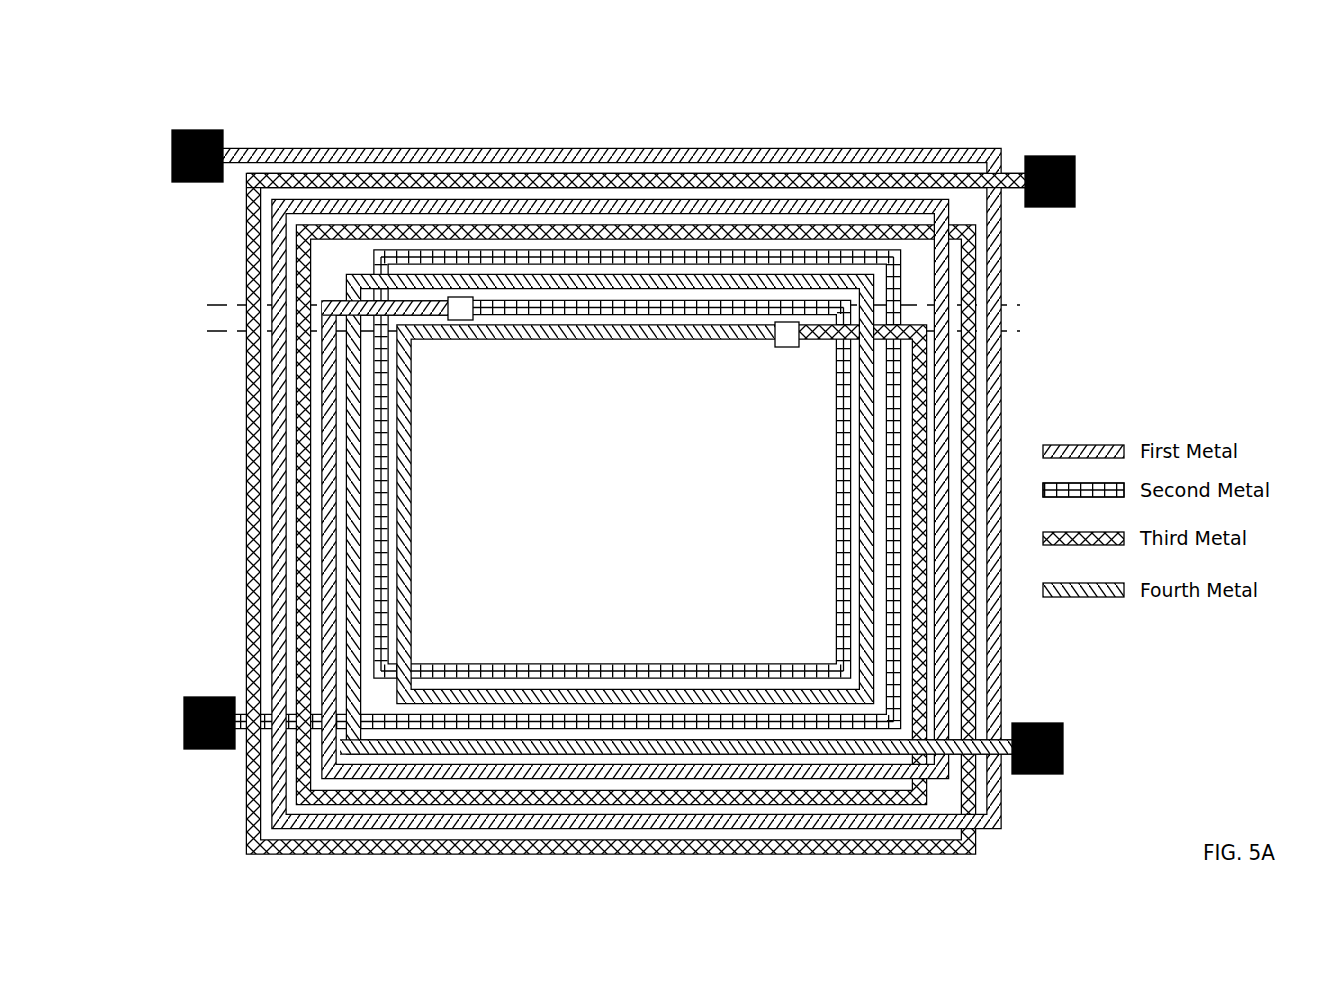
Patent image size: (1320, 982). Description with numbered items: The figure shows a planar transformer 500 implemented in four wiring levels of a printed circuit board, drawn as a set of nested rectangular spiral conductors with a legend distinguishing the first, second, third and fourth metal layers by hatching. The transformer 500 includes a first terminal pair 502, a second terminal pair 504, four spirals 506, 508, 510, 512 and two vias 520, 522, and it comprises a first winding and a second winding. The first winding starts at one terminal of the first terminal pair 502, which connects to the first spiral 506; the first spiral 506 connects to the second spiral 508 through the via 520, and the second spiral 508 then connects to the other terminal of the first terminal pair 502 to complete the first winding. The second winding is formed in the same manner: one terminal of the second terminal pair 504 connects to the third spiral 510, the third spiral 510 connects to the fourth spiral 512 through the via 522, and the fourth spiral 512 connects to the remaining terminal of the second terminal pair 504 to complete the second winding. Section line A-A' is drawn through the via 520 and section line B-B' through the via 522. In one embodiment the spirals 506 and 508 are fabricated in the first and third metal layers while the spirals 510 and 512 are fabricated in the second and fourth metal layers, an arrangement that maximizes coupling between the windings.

The planar transformer 500 is at (163, 44).
The first terminal pair 502 is at (177, 439).
The second terminal pair 504 is at (1071, 465).
The first spiral 506 is at (392, 135).
The second spiral 508 is at (564, 328).
The third spiral 510 is at (860, 160).
The fourth spiral 512 is at (695, 354).
The via 520 is at (460, 335).
The via 522 is at (788, 362).